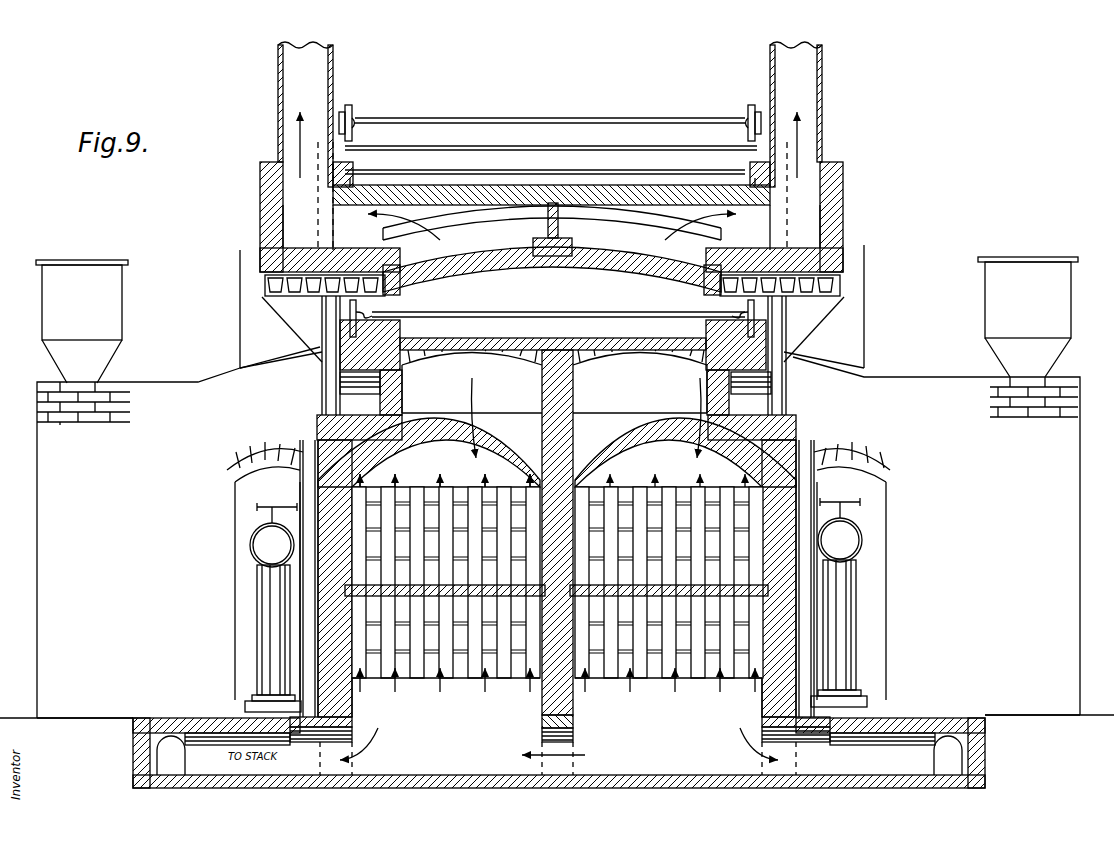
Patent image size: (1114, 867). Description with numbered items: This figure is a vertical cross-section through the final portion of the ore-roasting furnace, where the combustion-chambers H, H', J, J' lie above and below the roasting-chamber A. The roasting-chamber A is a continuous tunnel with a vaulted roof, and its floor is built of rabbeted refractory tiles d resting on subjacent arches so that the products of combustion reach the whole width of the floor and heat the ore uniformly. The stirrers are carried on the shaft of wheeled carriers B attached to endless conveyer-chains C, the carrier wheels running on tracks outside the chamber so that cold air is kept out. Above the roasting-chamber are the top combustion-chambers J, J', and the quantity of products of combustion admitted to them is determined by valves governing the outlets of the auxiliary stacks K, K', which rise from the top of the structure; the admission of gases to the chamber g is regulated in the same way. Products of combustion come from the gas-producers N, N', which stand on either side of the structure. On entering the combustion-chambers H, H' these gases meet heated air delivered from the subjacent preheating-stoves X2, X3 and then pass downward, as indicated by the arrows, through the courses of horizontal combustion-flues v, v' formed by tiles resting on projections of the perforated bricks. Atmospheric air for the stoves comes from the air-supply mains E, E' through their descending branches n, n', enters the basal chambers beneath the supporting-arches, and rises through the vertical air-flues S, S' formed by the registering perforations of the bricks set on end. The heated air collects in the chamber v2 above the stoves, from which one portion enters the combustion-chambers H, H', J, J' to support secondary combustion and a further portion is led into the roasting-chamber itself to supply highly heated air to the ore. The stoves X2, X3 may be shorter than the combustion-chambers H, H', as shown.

The auxiliary stack K is at (285, 146).
The auxiliary stack K' is at (816, 146).
The combustion-chamber J is at (544, 226).
The combustion-chamber J' is at (675, 230).
The chamber g is at (547, 229).
The roasting-chamber A is at (530, 302).
The endless conveyer-chain C is at (524, 260).
The wheeled carrier B is at (484, 320).
The floor tile d is at (553, 334).
The combustion-chamber H is at (472, 381).
The combustion-chamber H' is at (640, 381).
The chamber v2 is at (562, 426).
The air-flue S is at (445, 573).
The air-flue S' is at (669, 573).
The horizontal flue v is at (445, 495).
The horizontal flue v' is at (677, 490).
The preheating-stove X2 is at (398, 712).
The preheating-stove X3 is at (618, 712).
The gas-producer N is at (178, 489).
The gas-producer N' is at (936, 486).
The air-supply main E is at (243, 535).
The air-supply main E' is at (863, 530).
The descending branch n is at (250, 638).
The descending branch n' is at (861, 633).